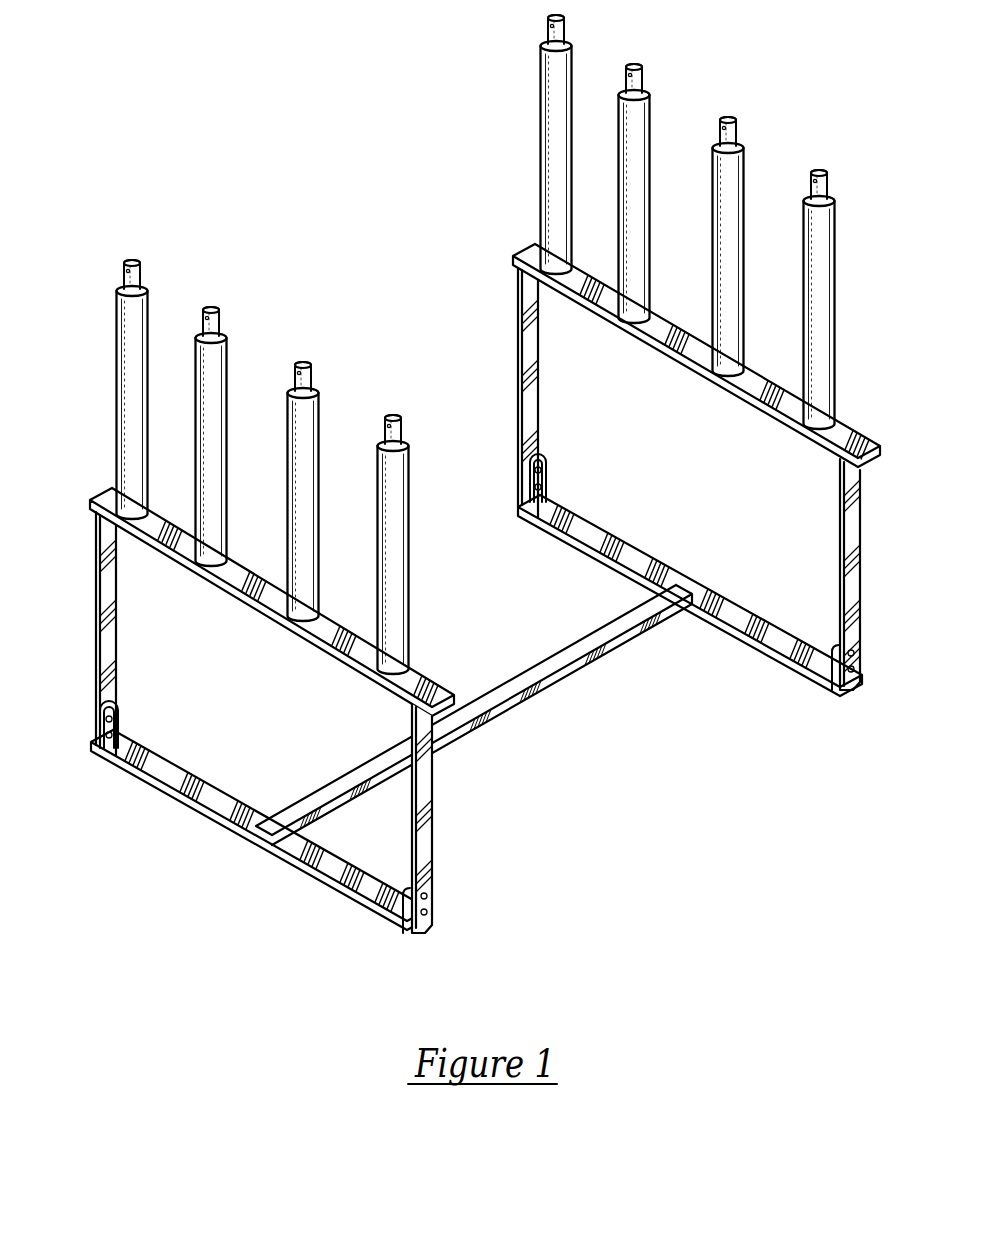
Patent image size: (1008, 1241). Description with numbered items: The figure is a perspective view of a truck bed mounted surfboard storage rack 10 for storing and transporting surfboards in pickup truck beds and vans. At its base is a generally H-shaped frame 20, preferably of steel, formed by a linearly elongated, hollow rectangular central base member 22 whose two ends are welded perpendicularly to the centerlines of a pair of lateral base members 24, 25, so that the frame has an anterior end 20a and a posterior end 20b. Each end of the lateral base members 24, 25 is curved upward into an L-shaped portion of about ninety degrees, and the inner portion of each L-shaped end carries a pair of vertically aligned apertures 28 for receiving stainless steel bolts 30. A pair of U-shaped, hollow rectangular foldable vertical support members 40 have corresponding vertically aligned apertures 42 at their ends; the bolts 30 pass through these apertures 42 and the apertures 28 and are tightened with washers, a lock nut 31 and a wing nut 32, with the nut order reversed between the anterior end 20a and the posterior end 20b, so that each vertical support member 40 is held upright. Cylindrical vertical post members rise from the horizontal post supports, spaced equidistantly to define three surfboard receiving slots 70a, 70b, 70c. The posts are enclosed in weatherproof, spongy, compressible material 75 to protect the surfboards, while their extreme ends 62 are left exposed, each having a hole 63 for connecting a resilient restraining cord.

The truck bed mounted surfboard storage rack 10 is at (216, 56).
The H-shaped frame 20 is at (549, 741).
The anterior end 20a is at (78, 695).
The posterior end 20b is at (501, 435).
The central base member 22 is at (553, 663).
The lateral base member 24 is at (200, 812).
The lateral base member 25 is at (765, 652).
The apertures 28 is at (104, 730).
The bolts 30 is at (438, 897).
The lock nut 31 is at (100, 746).
The wing nut 32 is at (120, 712).
The foldable vertical support members 40 is at (96, 608).
The apertures 42 is at (432, 915).
The extreme ends 62 is at (137, 265).
The hole 63 is at (126, 276).
The surfboard receiving slot 70a is at (166, 447).
The surfboard receiving slot 70b is at (266, 552).
The surfboard receiving slot 70c is at (348, 604).
The compressible material 75 is at (317, 415).